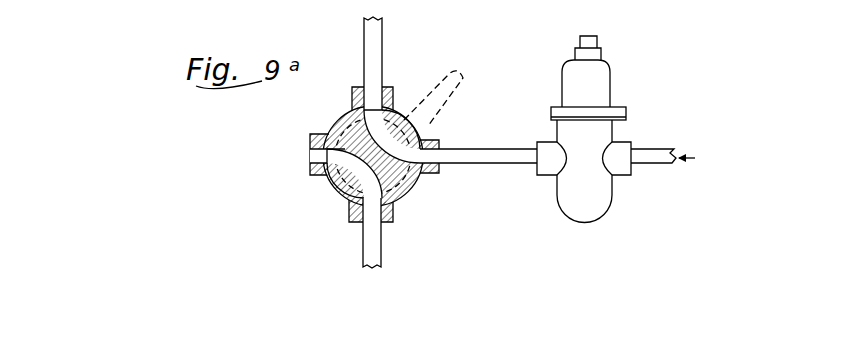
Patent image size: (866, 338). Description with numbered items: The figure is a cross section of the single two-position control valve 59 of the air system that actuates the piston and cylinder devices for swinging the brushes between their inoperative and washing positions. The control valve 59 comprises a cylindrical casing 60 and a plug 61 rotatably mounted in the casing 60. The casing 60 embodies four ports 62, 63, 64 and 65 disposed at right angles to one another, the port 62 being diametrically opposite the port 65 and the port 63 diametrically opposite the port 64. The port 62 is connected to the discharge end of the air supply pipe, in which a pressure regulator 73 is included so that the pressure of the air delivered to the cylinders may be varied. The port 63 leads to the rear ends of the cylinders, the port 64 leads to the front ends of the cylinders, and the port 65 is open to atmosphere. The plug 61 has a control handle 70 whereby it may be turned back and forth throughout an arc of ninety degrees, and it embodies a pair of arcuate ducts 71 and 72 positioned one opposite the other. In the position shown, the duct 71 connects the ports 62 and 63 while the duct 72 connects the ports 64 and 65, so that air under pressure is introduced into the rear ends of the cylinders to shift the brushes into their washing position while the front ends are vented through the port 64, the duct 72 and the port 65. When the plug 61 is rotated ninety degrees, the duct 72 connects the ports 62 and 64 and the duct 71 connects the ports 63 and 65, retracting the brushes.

The control valve 59 is at (316, 183).
The cylindrical casing 60 is at (399, 114).
The plug 61 is at (403, 197).
The port 62 is at (438, 141).
The port 63 is at (387, 95).
The port 64 is at (393, 220).
The port 65 is at (310, 149).
The control handle 70 is at (457, 82).
The arcuate duct 71 is at (418, 138).
The arcuate duct 72 is at (346, 185).
The pressure regulator 73 is at (606, 85).